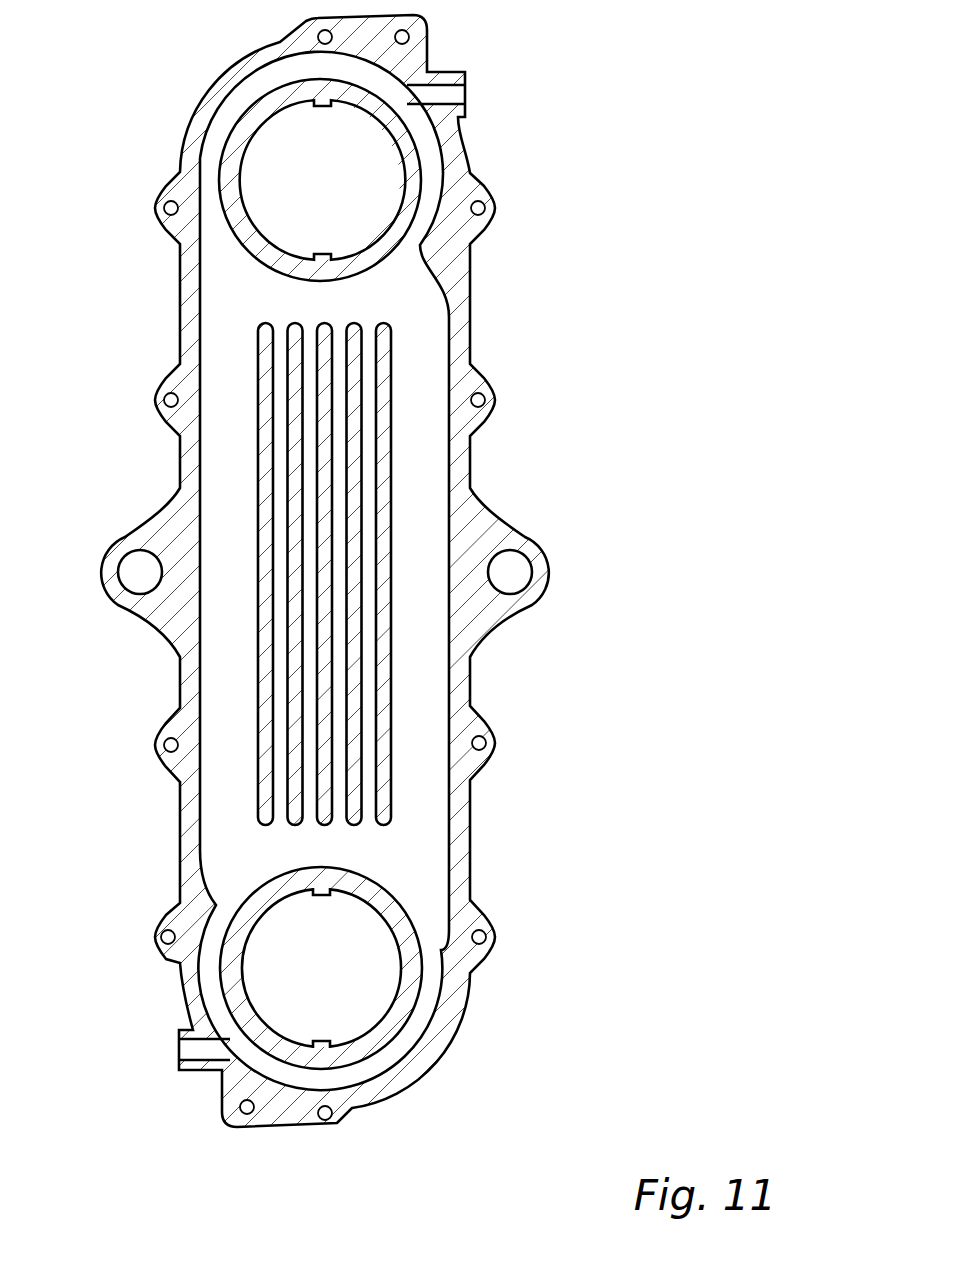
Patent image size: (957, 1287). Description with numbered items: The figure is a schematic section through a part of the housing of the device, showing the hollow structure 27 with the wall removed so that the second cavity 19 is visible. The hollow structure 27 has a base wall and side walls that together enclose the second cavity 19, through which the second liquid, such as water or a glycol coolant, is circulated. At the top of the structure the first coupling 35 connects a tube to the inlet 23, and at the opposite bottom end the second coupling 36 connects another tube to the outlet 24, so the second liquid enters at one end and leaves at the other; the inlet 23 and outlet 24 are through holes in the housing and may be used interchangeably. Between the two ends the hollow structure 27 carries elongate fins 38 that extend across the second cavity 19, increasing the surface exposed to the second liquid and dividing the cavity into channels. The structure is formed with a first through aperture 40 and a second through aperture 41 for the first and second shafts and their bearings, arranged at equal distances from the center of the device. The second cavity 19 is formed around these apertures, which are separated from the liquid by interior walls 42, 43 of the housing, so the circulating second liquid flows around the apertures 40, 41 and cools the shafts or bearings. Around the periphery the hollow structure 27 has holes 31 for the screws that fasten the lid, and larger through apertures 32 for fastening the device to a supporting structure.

The second cavity 19 is at (438, 802).
The inlet 23 is at (462, 92).
The outlet 24 is at (186, 1048).
The hollow structure 27 is at (458, 463).
The holes 31 is at (163, 745).
The through apertures 32 is at (120, 572).
The first coupling 35 is at (440, 77).
The second coupling 36 is at (192, 1075).
The fins 38 is at (385, 697).
The first through aperture 40 is at (265, 148).
The second through aperture 41 is at (370, 1008).
The interior wall 42 is at (233, 202).
The interior wall 43 is at (410, 968).